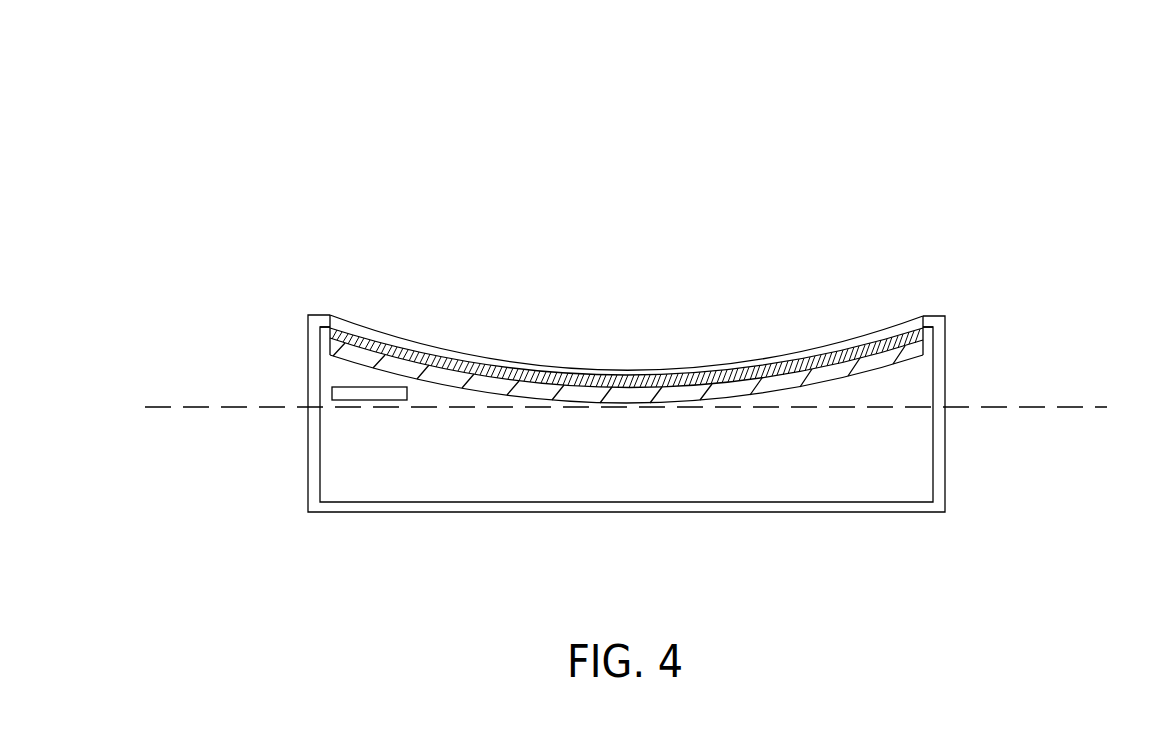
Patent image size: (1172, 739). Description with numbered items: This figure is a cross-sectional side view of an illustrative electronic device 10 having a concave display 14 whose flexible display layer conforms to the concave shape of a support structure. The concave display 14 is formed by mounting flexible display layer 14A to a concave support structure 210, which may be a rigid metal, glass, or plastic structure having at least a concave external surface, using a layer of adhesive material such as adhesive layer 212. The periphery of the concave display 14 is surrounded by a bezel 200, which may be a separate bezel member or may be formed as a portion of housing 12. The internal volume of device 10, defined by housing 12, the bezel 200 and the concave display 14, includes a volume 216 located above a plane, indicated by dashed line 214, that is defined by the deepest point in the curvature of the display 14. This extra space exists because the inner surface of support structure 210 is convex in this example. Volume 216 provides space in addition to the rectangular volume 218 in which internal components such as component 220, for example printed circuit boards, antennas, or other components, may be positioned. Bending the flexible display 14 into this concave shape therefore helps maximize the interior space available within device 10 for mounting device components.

The electronic device 10 is at (376, 92).
The housing 12 is at (943, 452).
The concave display 14 is at (638, 312).
The flexible display layer 14A is at (806, 373).
The bezel 200 is at (320, 313).
The support structure 210 is at (822, 375).
The adhesive layer 212 is at (787, 362).
The dashed line 214 is at (626, 408).
The volume 216 is at (348, 375).
The rectangular volume 218 is at (717, 472).
The component 220 is at (353, 402).